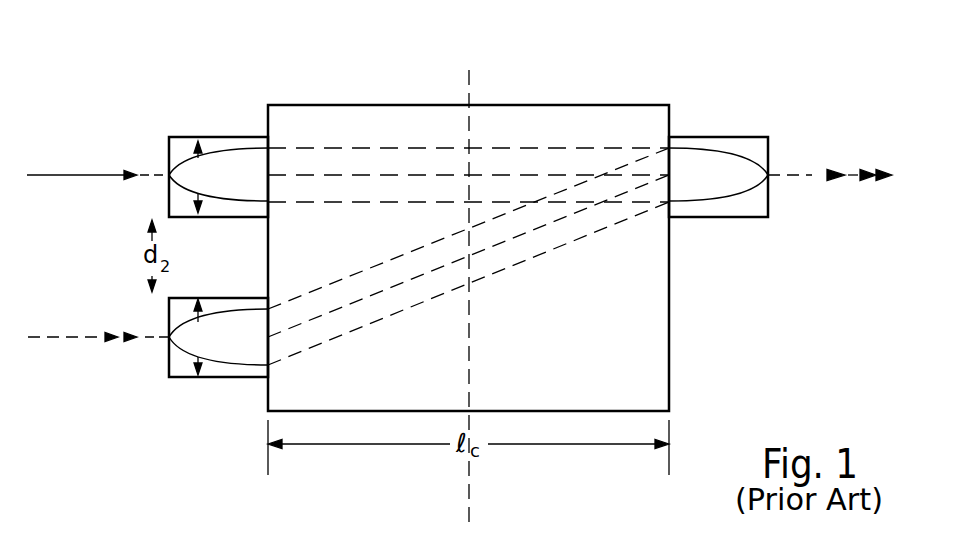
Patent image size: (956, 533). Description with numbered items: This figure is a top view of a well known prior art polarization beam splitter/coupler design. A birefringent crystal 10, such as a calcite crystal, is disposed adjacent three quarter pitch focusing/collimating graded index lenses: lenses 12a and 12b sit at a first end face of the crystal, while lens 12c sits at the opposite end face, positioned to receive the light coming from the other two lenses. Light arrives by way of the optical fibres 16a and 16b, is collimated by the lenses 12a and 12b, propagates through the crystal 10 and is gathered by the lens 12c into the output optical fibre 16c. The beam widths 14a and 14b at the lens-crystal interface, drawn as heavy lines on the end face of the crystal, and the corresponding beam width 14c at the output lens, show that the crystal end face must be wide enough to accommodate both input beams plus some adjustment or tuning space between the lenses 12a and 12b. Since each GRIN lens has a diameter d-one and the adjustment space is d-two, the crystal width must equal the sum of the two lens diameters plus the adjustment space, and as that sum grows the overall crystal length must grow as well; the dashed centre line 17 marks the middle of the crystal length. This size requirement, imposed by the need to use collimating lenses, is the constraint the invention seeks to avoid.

The birefringent crystal 10 is at (382, 125).
The graded index lens 12a is at (220, 145).
The graded index lens 12b is at (187, 368).
The graded index lens 12c is at (708, 145).
The beam width 14a is at (270, 170).
The beam width 14b is at (270, 337).
The beam width 14c is at (669, 173).
The optical fibre 16a is at (57, 173).
The optical fibre 16b is at (62, 340).
The optical fibre 16c is at (787, 175).
The center plane of coupler 17 is at (470, 513).